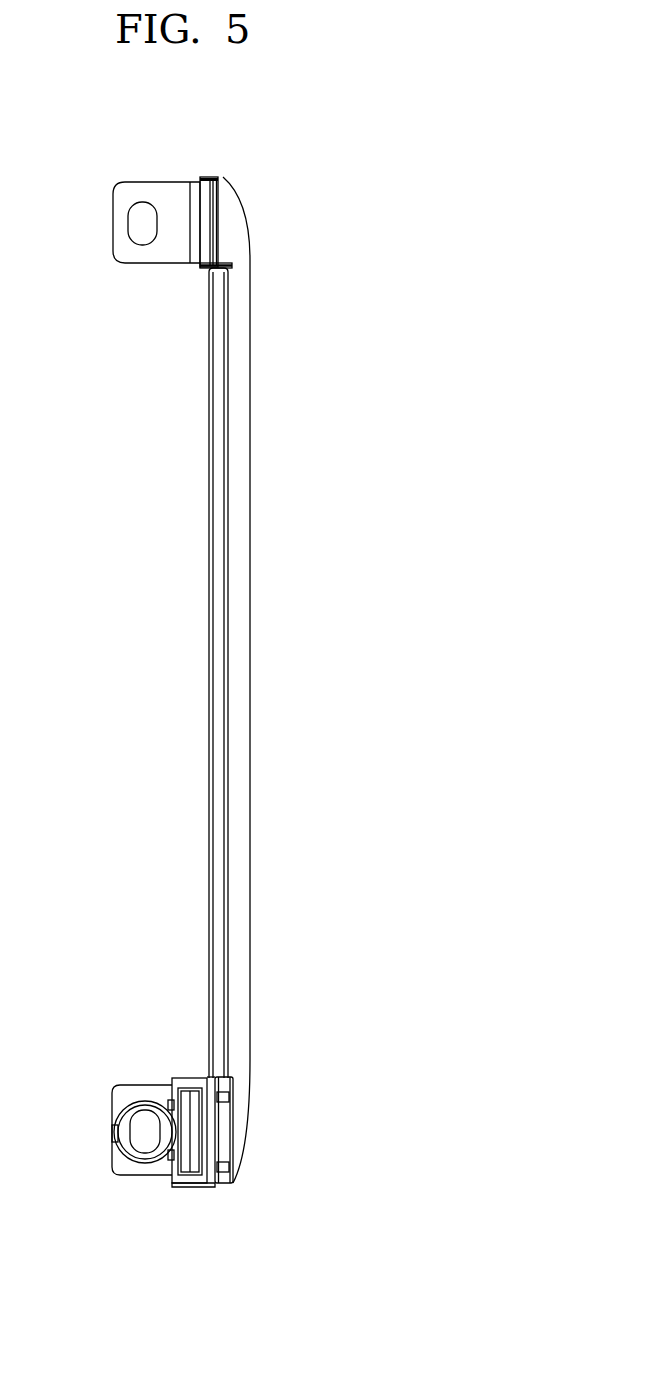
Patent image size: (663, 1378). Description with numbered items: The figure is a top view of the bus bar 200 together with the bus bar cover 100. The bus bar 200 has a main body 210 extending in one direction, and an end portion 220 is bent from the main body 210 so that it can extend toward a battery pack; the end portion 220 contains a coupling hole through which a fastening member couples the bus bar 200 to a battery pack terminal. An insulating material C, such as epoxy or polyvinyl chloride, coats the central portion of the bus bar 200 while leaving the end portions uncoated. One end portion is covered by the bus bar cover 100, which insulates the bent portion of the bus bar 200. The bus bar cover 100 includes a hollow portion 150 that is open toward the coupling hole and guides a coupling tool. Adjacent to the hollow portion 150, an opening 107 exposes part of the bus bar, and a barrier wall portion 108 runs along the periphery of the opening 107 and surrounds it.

The bus bar cover 100 is at (161, 1159).
The opening 107 is at (170, 1185).
The barrier wall portion 108 is at (185, 1088).
The hollow portion 150 is at (124, 1142).
The bus bar 200 is at (243, 652).
The main body 210 is at (237, 543).
The end portion 220 is at (132, 194).
The insulating material C is at (238, 360).